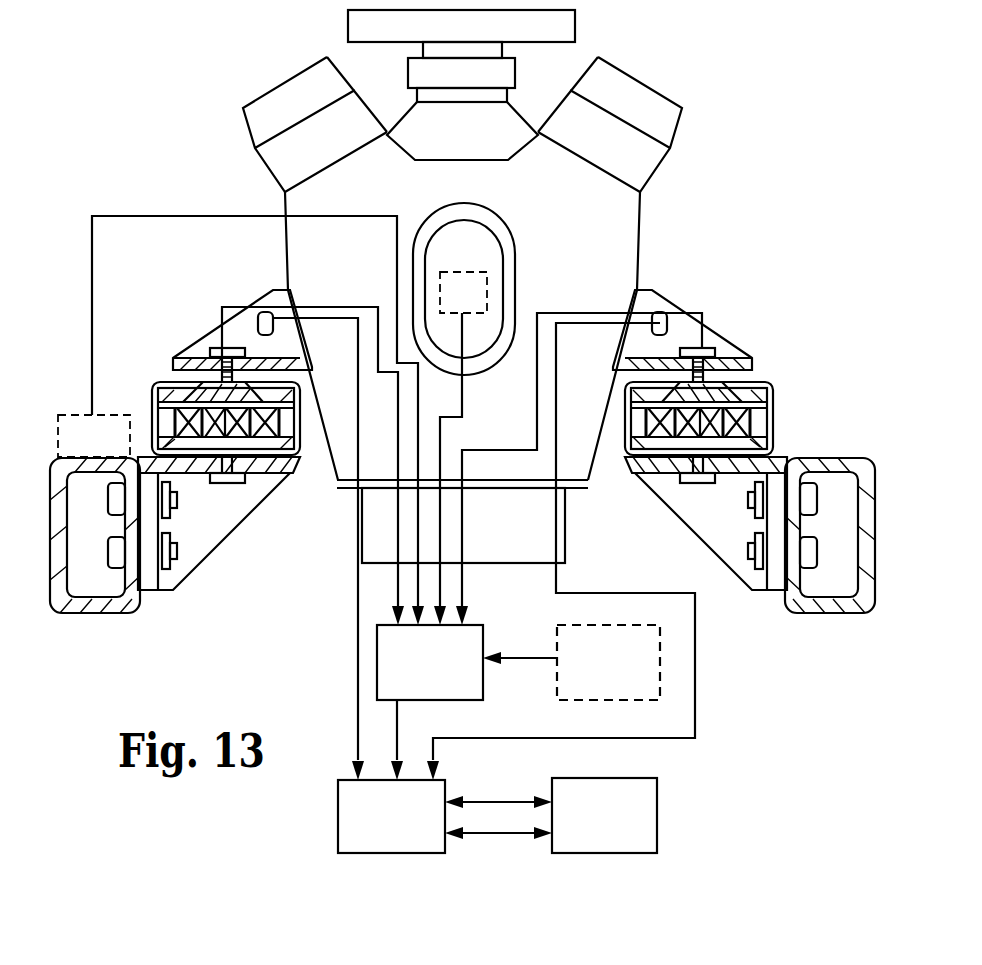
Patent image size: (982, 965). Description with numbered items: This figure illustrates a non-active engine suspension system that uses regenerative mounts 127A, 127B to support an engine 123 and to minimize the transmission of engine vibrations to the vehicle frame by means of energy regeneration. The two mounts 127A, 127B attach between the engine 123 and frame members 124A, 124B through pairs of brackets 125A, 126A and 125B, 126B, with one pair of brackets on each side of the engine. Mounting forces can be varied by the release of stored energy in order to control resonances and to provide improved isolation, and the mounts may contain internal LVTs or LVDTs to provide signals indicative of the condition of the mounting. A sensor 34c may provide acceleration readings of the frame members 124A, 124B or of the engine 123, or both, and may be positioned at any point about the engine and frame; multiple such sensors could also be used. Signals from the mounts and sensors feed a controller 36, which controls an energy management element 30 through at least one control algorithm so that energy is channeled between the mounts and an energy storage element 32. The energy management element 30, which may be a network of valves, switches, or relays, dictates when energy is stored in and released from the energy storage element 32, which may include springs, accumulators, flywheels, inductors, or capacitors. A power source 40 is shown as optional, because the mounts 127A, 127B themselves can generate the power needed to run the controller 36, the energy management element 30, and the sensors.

The engine 123 is at (591, 238).
The sensor 34c is at (486, 308).
The frame member 124A is at (88, 613).
The frame member 124B is at (826, 615).
The bracket 125A is at (257, 507).
The bracket 125B is at (682, 520).
The bracket 126A is at (230, 348).
The bracket 126B is at (668, 316).
The regenerative mount 127A is at (165, 370).
The regenerative mount 127B is at (762, 368).
The controller 36 is at (443, 674).
The power source 40 is at (621, 674).
The energy management element 30 is at (404, 830).
The energy storage element 32 is at (617, 830).